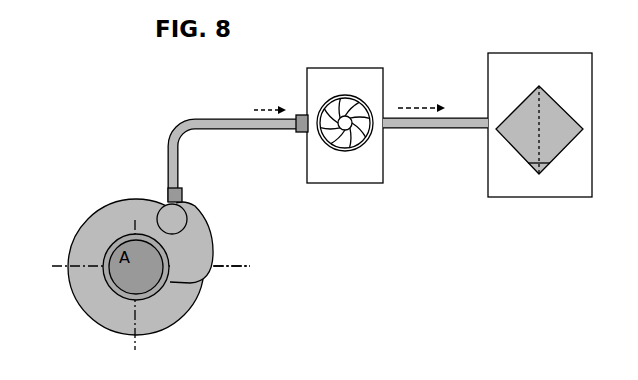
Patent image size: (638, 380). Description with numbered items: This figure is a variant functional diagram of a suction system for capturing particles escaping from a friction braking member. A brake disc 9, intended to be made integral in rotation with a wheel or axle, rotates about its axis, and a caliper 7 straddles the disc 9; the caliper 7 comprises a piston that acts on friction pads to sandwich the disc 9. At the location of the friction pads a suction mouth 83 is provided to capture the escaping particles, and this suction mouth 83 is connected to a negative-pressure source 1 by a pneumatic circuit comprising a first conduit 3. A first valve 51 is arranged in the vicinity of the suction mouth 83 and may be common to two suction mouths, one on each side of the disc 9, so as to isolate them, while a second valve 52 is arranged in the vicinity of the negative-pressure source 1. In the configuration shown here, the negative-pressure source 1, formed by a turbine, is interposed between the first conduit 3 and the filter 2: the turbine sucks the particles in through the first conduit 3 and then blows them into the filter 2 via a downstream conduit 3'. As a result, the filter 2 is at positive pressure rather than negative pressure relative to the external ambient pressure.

The negative-pressure source 1 is at (349, 57).
The filter 2 is at (545, 46).
The first conduit 3 is at (233, 146).
The downstream conduit 3' is at (435, 154).
The caliper 7 is at (228, 244).
The brake disc 9 is at (85, 196).
The first valve 51 is at (168, 196).
The second valve 52 is at (302, 116).
The suction mouth 83 is at (184, 211).